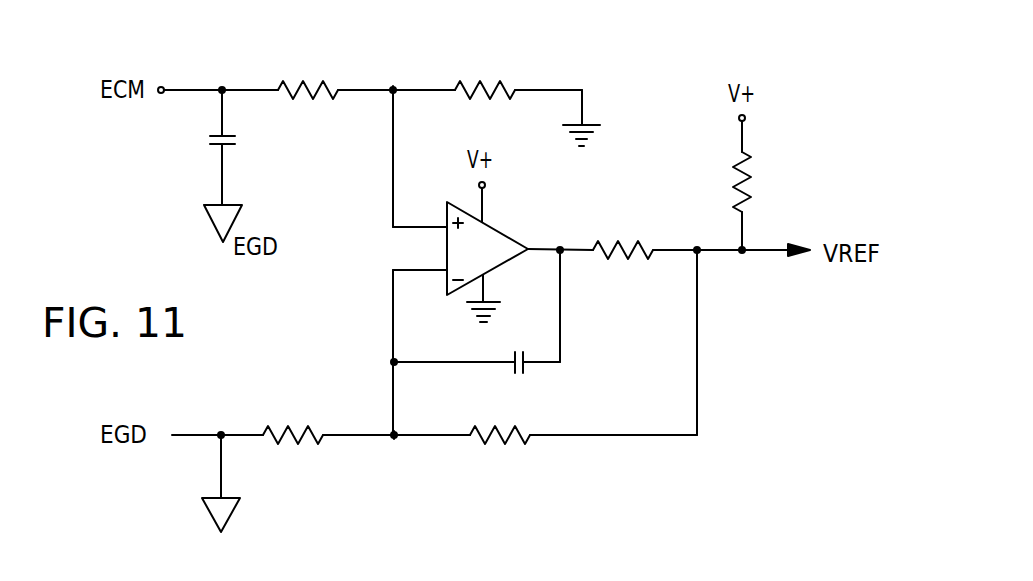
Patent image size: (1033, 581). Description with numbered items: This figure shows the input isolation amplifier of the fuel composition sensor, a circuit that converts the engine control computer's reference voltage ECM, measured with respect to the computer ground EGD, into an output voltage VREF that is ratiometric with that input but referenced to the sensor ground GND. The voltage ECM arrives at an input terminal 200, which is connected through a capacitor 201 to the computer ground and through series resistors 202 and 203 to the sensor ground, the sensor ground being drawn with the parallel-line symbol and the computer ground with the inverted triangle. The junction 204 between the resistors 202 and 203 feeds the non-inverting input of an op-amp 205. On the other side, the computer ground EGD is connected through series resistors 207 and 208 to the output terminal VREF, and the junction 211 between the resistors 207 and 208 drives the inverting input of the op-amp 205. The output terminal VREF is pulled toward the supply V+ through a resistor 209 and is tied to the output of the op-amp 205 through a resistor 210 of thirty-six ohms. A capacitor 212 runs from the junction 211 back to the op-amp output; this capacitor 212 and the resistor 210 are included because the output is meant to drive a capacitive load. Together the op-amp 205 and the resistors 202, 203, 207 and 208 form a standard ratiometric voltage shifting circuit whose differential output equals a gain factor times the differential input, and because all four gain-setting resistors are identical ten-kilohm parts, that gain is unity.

The input terminal 200 is at (161, 86).
The capacitor 201 is at (220, 148).
The resistor 202 is at (302, 80).
The resistor 203 is at (480, 82).
The junction 204 is at (395, 85).
The op-amp 205 is at (493, 245).
The resistor 207 is at (277, 438).
The resistor 208 is at (487, 442).
The resistor 209 is at (748, 186).
The resistor 210 is at (610, 253).
The junction 211 is at (397, 440).
The capacitor 212 is at (525, 375).